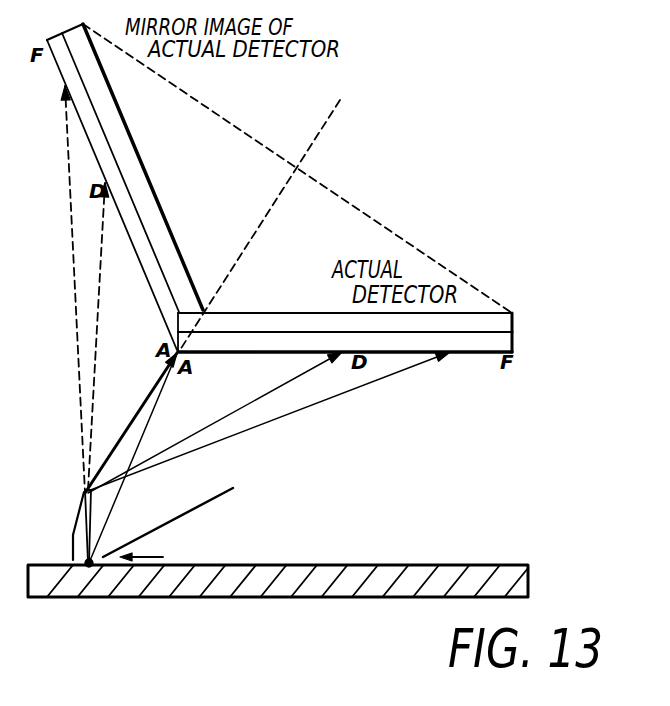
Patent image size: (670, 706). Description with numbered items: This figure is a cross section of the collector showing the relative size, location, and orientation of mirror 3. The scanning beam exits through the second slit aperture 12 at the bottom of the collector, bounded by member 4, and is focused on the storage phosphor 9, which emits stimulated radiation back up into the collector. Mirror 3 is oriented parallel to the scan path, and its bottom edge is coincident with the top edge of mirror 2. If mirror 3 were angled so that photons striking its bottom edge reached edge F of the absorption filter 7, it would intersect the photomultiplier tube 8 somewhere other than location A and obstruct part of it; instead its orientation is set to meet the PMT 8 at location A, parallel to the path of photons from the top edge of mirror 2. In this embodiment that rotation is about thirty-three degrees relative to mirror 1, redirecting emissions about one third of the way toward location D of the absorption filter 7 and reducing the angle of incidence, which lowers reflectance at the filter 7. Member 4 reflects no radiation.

The mirror 1 is at (70, 548).
The mirror 2 is at (82, 507).
The mirror 3 is at (137, 412).
The member 4 is at (197, 507).
The stimulating radiation absorption filter 7 is at (286, 338).
The photomultiplier tube 8 is at (265, 318).
The storage phosphor 9 is at (310, 565).
The second slit aperture 12 is at (160, 552).